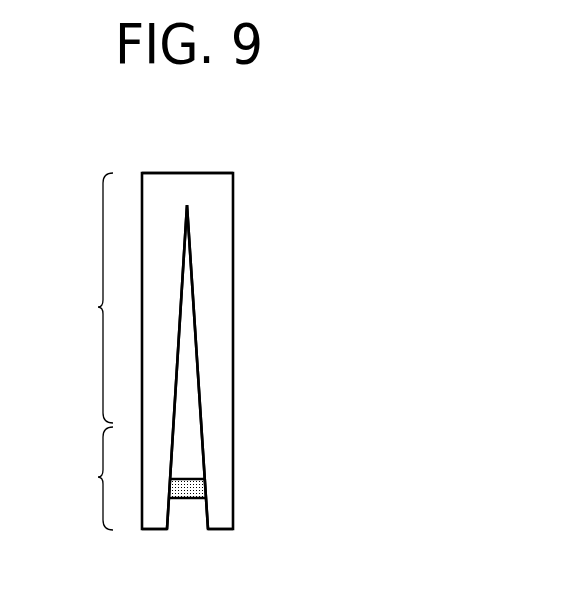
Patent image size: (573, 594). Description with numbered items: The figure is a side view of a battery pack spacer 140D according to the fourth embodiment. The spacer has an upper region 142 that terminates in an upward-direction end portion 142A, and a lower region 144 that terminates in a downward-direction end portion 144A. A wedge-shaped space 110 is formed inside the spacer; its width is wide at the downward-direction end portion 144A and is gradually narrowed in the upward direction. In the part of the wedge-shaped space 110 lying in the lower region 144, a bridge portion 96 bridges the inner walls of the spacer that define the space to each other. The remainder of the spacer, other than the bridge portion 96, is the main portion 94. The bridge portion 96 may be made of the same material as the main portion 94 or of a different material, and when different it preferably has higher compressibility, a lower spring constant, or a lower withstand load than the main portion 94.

The battery pack spacer 140D is at (517, 219).
The upper region 142 is at (79, 298).
The upward-direction end portion 142A is at (196, 173).
The lower region 144 is at (79, 478).
The downward-direction end portion 144A is at (153, 529).
The main portion 94 is at (215, 278).
The wedge-shaped space 110 is at (190, 412).
The bridge portion 96 is at (190, 488).